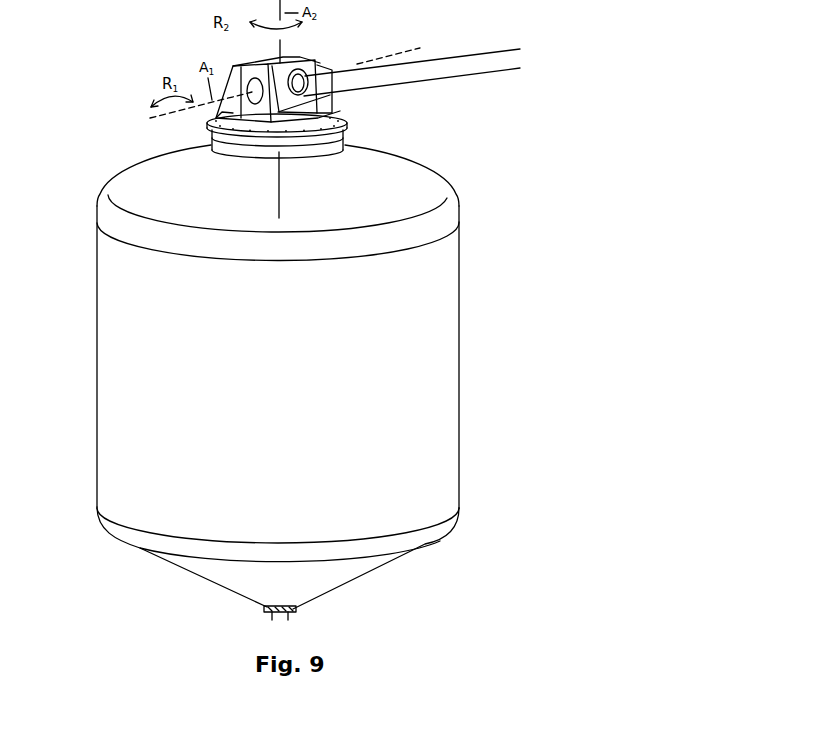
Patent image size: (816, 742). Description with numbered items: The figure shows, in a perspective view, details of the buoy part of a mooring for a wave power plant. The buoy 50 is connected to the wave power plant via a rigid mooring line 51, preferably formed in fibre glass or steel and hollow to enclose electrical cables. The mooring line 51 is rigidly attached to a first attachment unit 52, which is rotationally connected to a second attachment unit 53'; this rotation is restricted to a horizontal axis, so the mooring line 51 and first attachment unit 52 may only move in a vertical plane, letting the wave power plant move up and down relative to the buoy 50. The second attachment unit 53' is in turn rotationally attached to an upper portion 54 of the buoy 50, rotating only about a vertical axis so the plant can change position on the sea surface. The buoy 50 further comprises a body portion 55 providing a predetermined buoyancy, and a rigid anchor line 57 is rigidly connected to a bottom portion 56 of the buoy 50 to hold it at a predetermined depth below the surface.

The buoy 50 is at (153, 157).
The mooring line 51 is at (470, 57).
The first attachment unit 52 is at (307, 58).
The second attachment unit 53' is at (304, 123).
The upper portion 54 is at (208, 137).
The body portion 55 is at (107, 345).
The bottom portion 56 is at (210, 583).
The rigid anchor line 57 is at (296, 611).